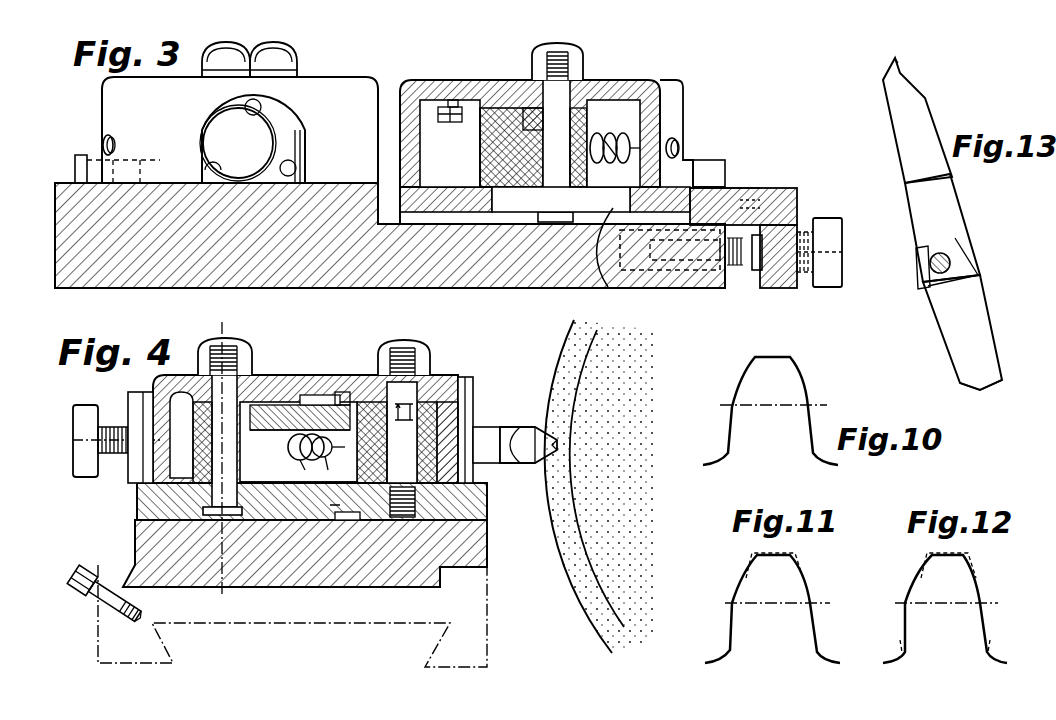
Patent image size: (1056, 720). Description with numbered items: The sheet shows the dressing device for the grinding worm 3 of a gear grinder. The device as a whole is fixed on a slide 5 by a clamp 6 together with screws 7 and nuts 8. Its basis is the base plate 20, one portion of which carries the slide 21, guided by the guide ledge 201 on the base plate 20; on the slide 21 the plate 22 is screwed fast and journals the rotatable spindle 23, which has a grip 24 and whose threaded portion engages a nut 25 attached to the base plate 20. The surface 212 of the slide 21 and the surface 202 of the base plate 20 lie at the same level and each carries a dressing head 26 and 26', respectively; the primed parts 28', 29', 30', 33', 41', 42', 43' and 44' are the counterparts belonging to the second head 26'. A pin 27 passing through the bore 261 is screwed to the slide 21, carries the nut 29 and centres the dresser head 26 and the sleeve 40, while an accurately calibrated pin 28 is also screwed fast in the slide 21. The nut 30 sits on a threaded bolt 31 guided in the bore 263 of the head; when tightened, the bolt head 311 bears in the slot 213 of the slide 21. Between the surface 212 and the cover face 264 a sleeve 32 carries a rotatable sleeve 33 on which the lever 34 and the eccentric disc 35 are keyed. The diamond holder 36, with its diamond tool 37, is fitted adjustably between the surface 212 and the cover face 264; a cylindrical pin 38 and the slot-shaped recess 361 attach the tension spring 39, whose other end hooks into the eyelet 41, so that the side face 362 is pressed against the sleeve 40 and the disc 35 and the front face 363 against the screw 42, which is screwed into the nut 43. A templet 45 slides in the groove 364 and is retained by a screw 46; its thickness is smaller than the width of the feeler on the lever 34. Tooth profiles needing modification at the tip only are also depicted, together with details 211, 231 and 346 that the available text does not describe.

In FIG. 4, the grinding worm 3 is at (587, 390).
In FIG. 4, the slide 5 is at (97, 660).
In FIG. 4, the clamp 6 is at (92, 612).
In FIG. 4, the screws 7 is at (116, 612).
In FIG. 4, the nuts 8 is at (84, 570).
In FIG. 3, the base plate 20 is at (322, 276).
In FIG. 4, the base plate 20 is at (135, 533).
In FIG. 3, the slide 21 is at (762, 192).
In FIG. 3, the plate 22 is at (782, 288).
In FIG. 3, the spindle 23 is at (757, 270).
In FIG. 3, the grip 24 is at (826, 218).
In FIG. 3, the nut 25 is at (676, 271).
In FIG. 3, the dresser head 26 is at (562, 139).
In FIG. 3, the dresser head 26' is at (224, 140).
In FIG. 4, the pin 27 is at (466, 468).
In FIG. 3, the calibrated pin 28 is at (709, 161).
In FIG. 3, the stop block (side view) 28' is at (111, 154).
In FIG. 4, the nut 29 is at (415, 424).
In FIG. 3, the clamping screw (side view) 29' is at (290, 57).
In FIG. 3, the nut 30 is at (571, 127).
In FIG. 4, the nut 30 is at (234, 458).
In FIG. 3, the pivot screw (side view) 30' is at (211, 57).
In FIG. 3, the threaded bolt 31 is at (565, 196).
In FIG. 4, the threaded bolt 31 is at (232, 397).
In FIG. 3, the sleeve 32 is at (588, 188).
In FIG. 4, the sleeve 32 is at (250, 470).
In FIG. 3, the sleeve 33 is at (613, 143).
In FIG. 4, the sleeve 33 is at (298, 442).
In FIG. 4, the spring seat 33' is at (300, 373).
In FIG. 3, the lever 34 is at (584, 122).
In FIG. 4, the lever 34 is at (270, 420).
In FIG. 3, the disc 35 is at (595, 163).
In FIG. 4, the disc 35 is at (228, 462).
In FIG. 3, the diamond holder 36 is at (484, 162).
In FIG. 4, the diamond holder 36 is at (497, 434).
In FIG. 13, the diamond holder 36 is at (926, 107).
In FIG. 13, the diamond tool 37 is at (897, 59).
In FIG. 4, the cylindrical pin 38 is at (323, 469).
In FIG. 3, the tension spring 39 is at (622, 162).
In FIG. 4, the tension spring 39 is at (301, 471).
In FIG. 4, the sleeve 40 is at (462, 414).
In FIG. 3, the eyelet 41 is at (687, 137).
In FIG. 3, the ring (side view) 41' is at (126, 139).
In FIG. 4, the screw 42 is at (116, 432).
In FIG. 3, the flange 42' is at (244, 139).
In FIG. 4, the nut 43 is at (128, 438).
In FIG. 3, the screw hole 43' is at (292, 125).
In FIG. 3, the screw hole 44' is at (272, 165).
In FIG. 3, the templet 45 is at (448, 122).
In FIG. 4, the templet 45 is at (322, 395).
In FIG. 13, the templet 45 is at (922, 287).
In FIG. 3, the screw 46 is at (452, 100).
In FIG. 4, the screw 46 is at (340, 392).
In FIG. 13, the screw 46 is at (930, 264).
In FIG. 3, the guide ledge 201 is at (722, 188).
In FIG. 4, the guide ledge 201 is at (358, 510).
In FIG. 3, the surface 202 is at (352, 183).
In FIG. 3, the slide guide 211 is at (748, 195).
In FIG. 4, the slide guide 211 is at (342, 506).
In FIG. 3, the surface 212 is at (460, 147).
In FIG. 3, the slot 213 is at (609, 288).
In FIG. 4, the slot 213 is at (140, 518).
In FIG. 3, the compression spring 231 is at (737, 266).
In FIG. 4, the bore 261 is at (432, 380).
In FIG. 4, the bore 263 is at (200, 376).
In FIG. 3, the cover face 264 is at (497, 108).
In FIG. 4, the cover face 264 is at (165, 384).
In FIG. 4, the head 311 is at (148, 504).
In FIG. 4, the guide wall 346 is at (352, 402).
In FIG. 4, the slot-shaped recess 361 is at (380, 462).
In FIG. 3, the side face 362 is at (561, 199).
In FIG. 13, the side face 362 is at (984, 305).
In FIG. 13, the front face 363 is at (996, 387).
In FIG. 13, the groove 364 is at (934, 290).